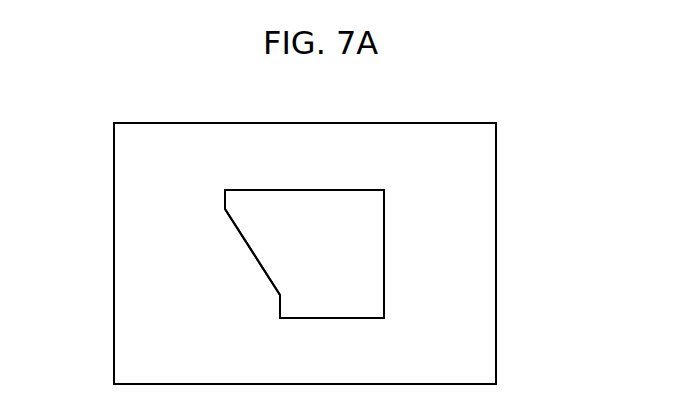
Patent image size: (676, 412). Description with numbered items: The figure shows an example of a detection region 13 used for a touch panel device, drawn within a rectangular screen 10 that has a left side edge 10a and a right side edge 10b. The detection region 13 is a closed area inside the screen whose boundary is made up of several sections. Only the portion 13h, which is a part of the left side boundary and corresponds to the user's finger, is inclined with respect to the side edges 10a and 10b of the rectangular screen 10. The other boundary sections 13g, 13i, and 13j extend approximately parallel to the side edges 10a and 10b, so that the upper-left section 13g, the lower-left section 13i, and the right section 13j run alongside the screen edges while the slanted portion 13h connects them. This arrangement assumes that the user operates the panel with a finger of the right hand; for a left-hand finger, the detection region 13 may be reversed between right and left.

The rectangular screen 10 is at (487, 148).
The side edge 10a is at (115, 263).
The side edge 10b is at (495, 238).
The detection region 13 is at (353, 188).
The boundary section 13g is at (224, 202).
The inclined portion of left side boundary 13h is at (245, 248).
The boundary section 13i is at (279, 310).
The boundary section 13j is at (384, 281).